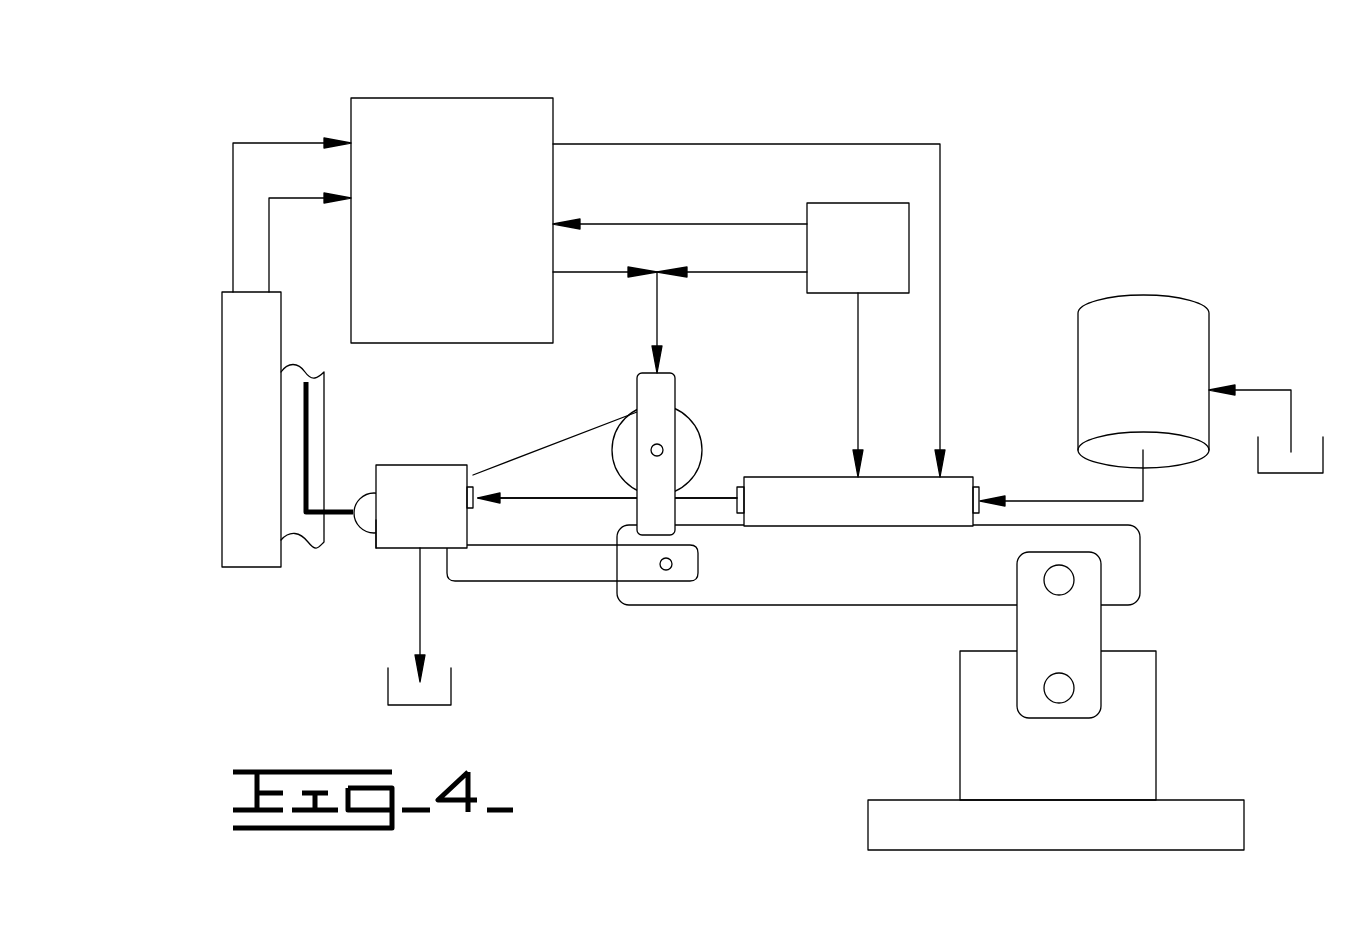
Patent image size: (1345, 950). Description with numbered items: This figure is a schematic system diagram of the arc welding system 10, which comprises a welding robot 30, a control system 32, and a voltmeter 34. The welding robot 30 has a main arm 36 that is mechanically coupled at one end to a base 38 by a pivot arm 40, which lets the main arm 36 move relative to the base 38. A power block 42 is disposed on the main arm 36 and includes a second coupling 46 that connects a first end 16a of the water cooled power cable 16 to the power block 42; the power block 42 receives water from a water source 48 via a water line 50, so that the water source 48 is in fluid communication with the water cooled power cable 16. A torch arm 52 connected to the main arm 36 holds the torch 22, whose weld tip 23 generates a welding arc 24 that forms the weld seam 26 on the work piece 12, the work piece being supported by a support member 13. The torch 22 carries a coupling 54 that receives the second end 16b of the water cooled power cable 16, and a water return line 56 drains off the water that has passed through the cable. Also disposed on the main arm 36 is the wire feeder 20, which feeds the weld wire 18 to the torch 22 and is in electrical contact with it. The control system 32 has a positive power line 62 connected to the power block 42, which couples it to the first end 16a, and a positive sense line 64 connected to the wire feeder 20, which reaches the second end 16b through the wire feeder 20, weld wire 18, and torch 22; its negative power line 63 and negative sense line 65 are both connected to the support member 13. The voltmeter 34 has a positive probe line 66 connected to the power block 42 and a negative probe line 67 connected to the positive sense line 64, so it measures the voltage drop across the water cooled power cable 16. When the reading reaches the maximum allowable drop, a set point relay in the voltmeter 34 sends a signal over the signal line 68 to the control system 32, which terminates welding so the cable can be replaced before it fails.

The welding system 10 is at (1012, 160).
The work piece 12 is at (300, 530).
The support member 13 is at (247, 555).
The water cooled power cable 16 is at (583, 497).
The first end of the water cooled power cable 16a is at (712, 498).
The second end of the water cooled power cable 16b is at (507, 502).
The weld wire 18 is at (597, 425).
The wire feeder 20 is at (665, 398).
The torch 22 is at (423, 463).
The weld tip 23 is at (360, 537).
The welding arc 24 is at (360, 497).
The weld seam 26 is at (312, 403).
The welding robot 30 is at (1180, 650).
The control system 32 is at (438, 97).
The voltmeter 34 is at (852, 202).
The main arm 36 is at (750, 582).
The base 38 is at (973, 765).
The pivot arm 40 is at (1090, 638).
The power block 42 is at (905, 488).
The second coupling 46 is at (737, 485).
The water source 48 is at (1108, 381).
The water line 50 is at (1062, 500).
The torch arm 52 is at (530, 568).
The coupling 54 is at (474, 480).
The water return line 56 is at (1270, 388).
The positive power line 62 is at (692, 143).
The negative power line 63 is at (275, 140).
The positive sense line 64 is at (595, 272).
The negative sense line 65 is at (268, 248).
The positive probe line 66 is at (858, 335).
The negative probe line 67 is at (738, 272).
The signal line 68 is at (668, 223).